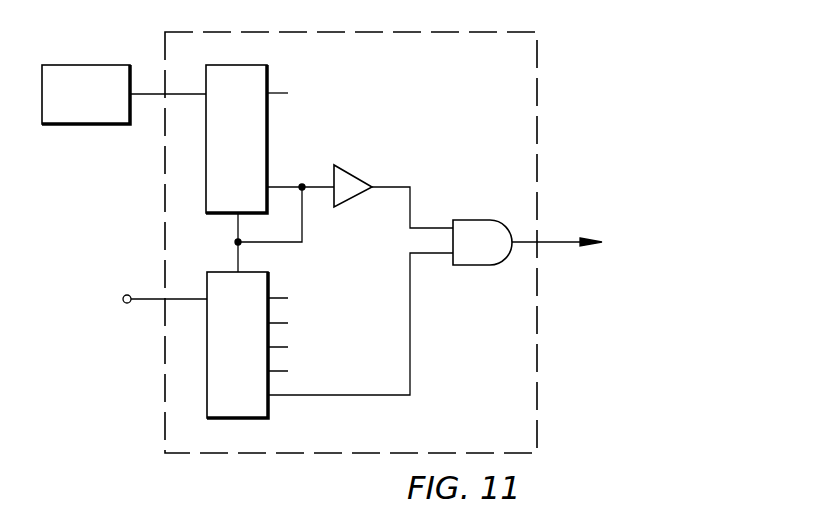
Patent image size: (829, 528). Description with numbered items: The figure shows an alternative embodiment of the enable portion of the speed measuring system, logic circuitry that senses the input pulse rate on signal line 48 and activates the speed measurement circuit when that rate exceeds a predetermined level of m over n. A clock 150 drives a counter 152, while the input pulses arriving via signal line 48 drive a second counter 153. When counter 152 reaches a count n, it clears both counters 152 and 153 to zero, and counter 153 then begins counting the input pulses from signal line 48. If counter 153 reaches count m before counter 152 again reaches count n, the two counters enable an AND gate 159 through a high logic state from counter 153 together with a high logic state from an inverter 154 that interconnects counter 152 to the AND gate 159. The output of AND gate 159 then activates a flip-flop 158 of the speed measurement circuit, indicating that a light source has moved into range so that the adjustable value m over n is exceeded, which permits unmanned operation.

The clock 150 is at (63, 113).
The counter 152 is at (262, 77).
The counter 153 is at (268, 289).
The inverter 154 is at (343, 188).
The AND gate 159 is at (473, 242).
The signal line 48 is at (140, 272).
The flip-flop 158 is at (595, 243).